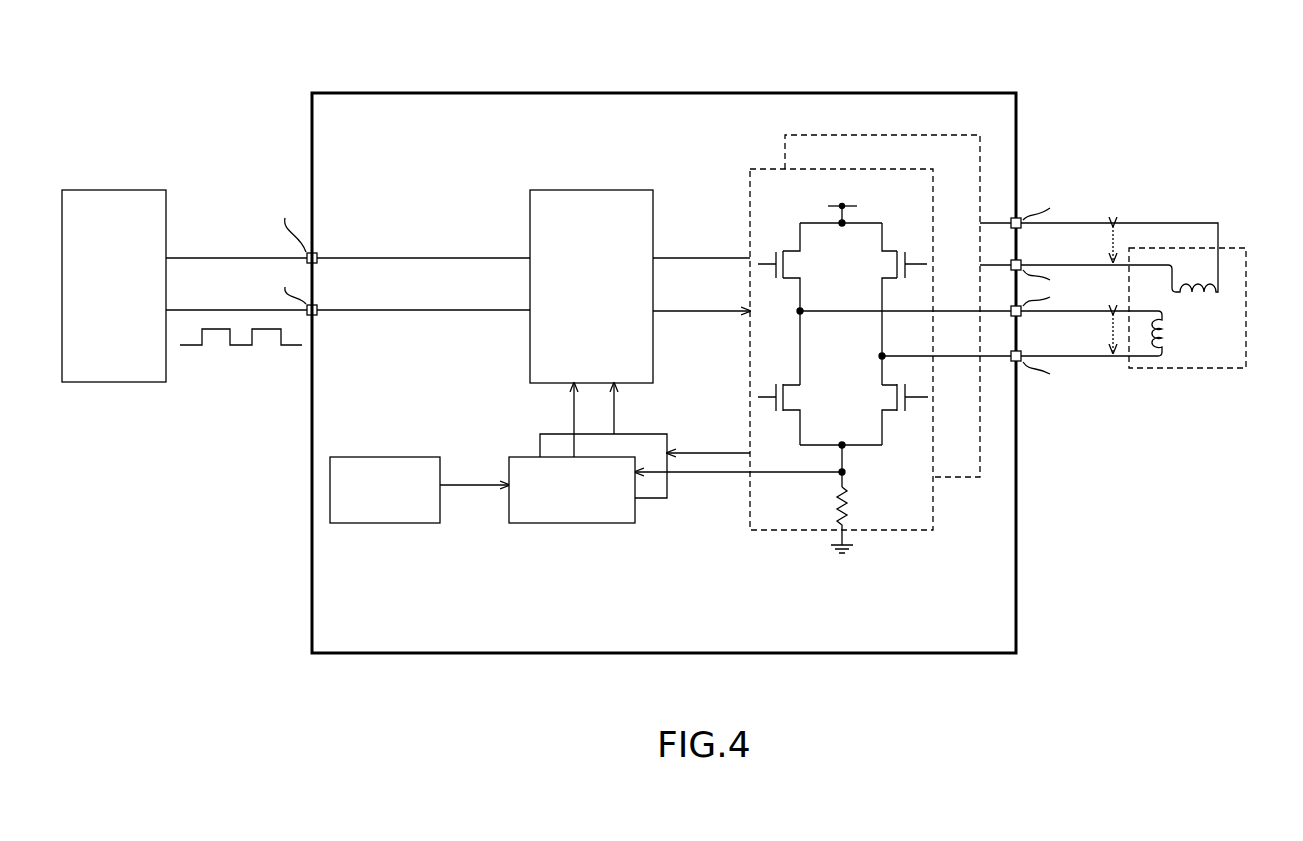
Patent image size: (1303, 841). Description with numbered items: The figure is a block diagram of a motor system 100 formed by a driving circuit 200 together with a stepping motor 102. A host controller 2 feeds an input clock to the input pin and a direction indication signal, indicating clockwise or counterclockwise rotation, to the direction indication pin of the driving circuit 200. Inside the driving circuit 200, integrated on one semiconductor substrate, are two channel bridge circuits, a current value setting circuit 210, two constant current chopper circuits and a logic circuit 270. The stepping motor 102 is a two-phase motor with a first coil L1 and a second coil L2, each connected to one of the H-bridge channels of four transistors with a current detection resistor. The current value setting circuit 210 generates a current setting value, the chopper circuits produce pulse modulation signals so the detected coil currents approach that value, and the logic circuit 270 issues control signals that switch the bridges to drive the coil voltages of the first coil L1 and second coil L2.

The motor system 100 is at (1160, 62).
The host controller 2 is at (118, 190).
The driving circuit 200 is at (896, 93).
The logic circuit 270 is at (590, 190).
The current value setting circuit 210 is at (390, 525).
The stepping motor 102 is at (1151, 283).
The first coil L1 is at (1167, 335).
The second coil L2 is at (1204, 293).